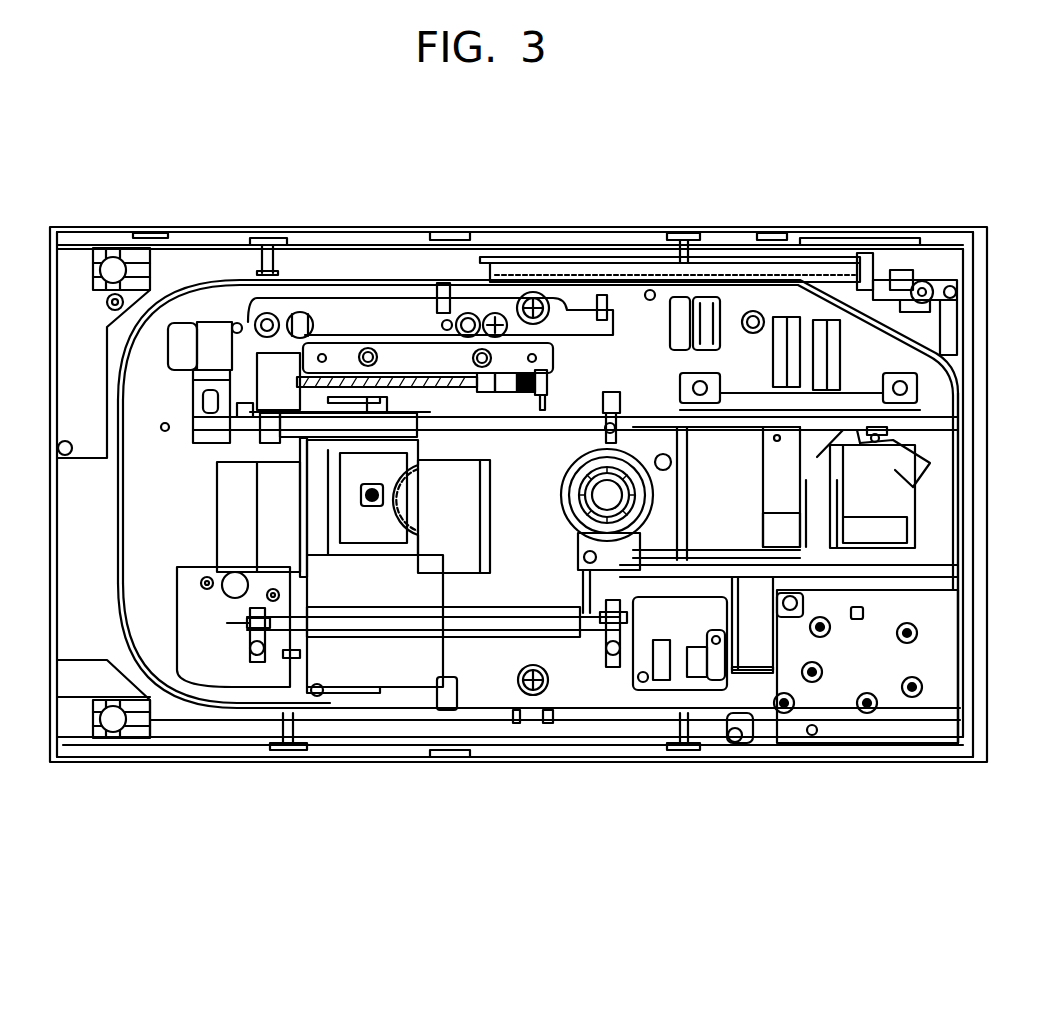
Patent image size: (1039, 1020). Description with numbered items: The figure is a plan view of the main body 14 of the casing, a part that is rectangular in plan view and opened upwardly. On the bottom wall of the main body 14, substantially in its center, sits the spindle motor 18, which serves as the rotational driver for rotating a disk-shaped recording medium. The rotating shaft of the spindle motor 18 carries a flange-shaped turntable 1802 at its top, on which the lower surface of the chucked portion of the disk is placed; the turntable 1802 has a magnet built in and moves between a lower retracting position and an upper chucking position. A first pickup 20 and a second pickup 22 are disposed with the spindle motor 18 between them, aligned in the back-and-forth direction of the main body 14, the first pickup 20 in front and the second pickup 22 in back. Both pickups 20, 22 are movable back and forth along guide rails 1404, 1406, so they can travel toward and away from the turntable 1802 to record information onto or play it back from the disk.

The main body 14 is at (627, 225).
The spindle motor 18 is at (588, 659).
The turntable 1802 is at (578, 530).
The first pickup 20 is at (868, 433).
The second pickup 22 is at (360, 523).
The guide rail 1404 is at (705, 577).
The guide rail 1406 is at (512, 432).